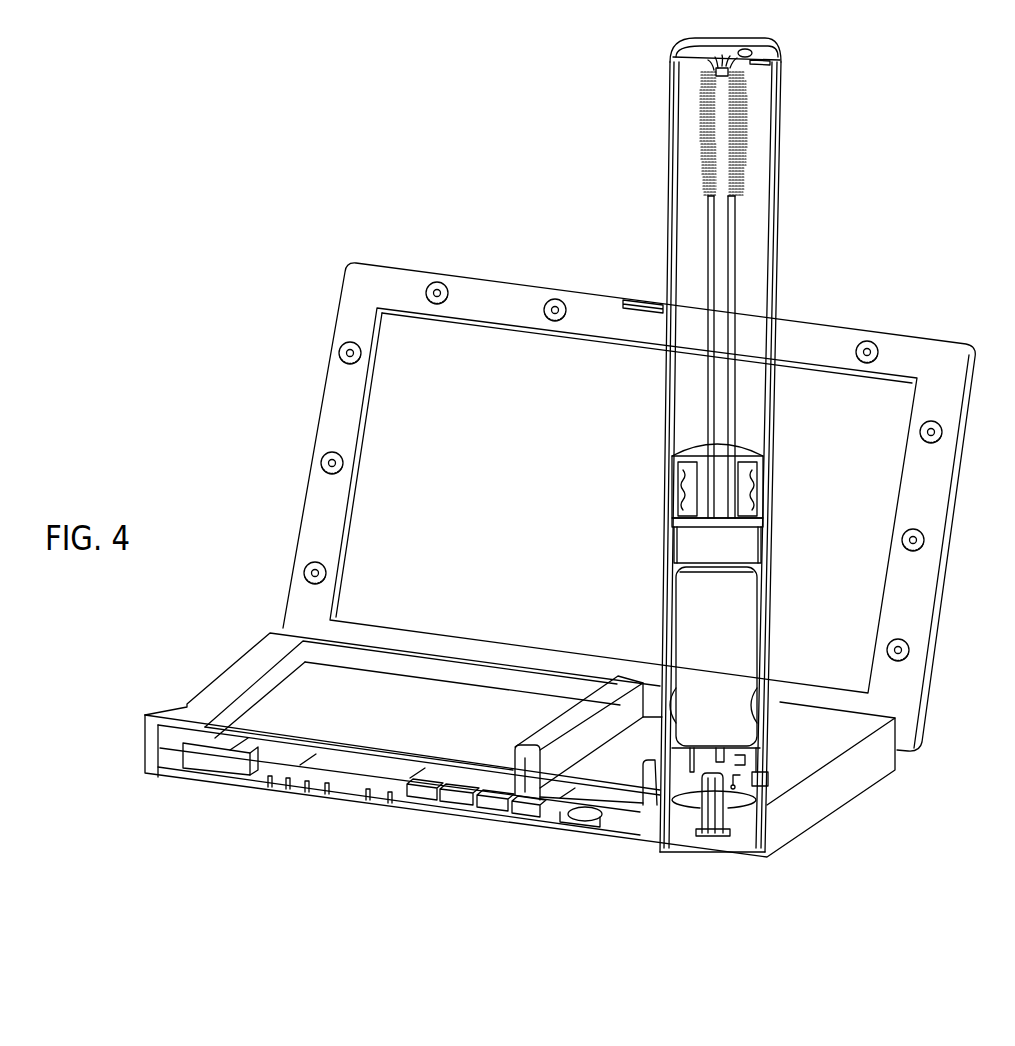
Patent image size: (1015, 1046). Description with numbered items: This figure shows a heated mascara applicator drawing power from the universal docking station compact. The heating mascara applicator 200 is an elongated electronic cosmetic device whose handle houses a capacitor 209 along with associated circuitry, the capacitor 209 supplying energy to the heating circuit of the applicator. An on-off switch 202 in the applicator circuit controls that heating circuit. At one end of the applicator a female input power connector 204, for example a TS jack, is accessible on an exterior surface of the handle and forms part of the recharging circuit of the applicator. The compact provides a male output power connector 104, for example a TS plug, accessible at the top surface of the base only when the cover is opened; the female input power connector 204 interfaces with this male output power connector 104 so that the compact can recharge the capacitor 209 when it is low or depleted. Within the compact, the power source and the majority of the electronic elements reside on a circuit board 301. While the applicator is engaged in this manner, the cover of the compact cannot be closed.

The heating mascara applicator 200 is at (735, 273).
The capacitor 209 is at (733, 687).
The on-off switch 202 is at (767, 777).
The female input power connector 204 is at (703, 800).
The male output power connector 104 is at (715, 820).
The circuit board 301 is at (267, 753).